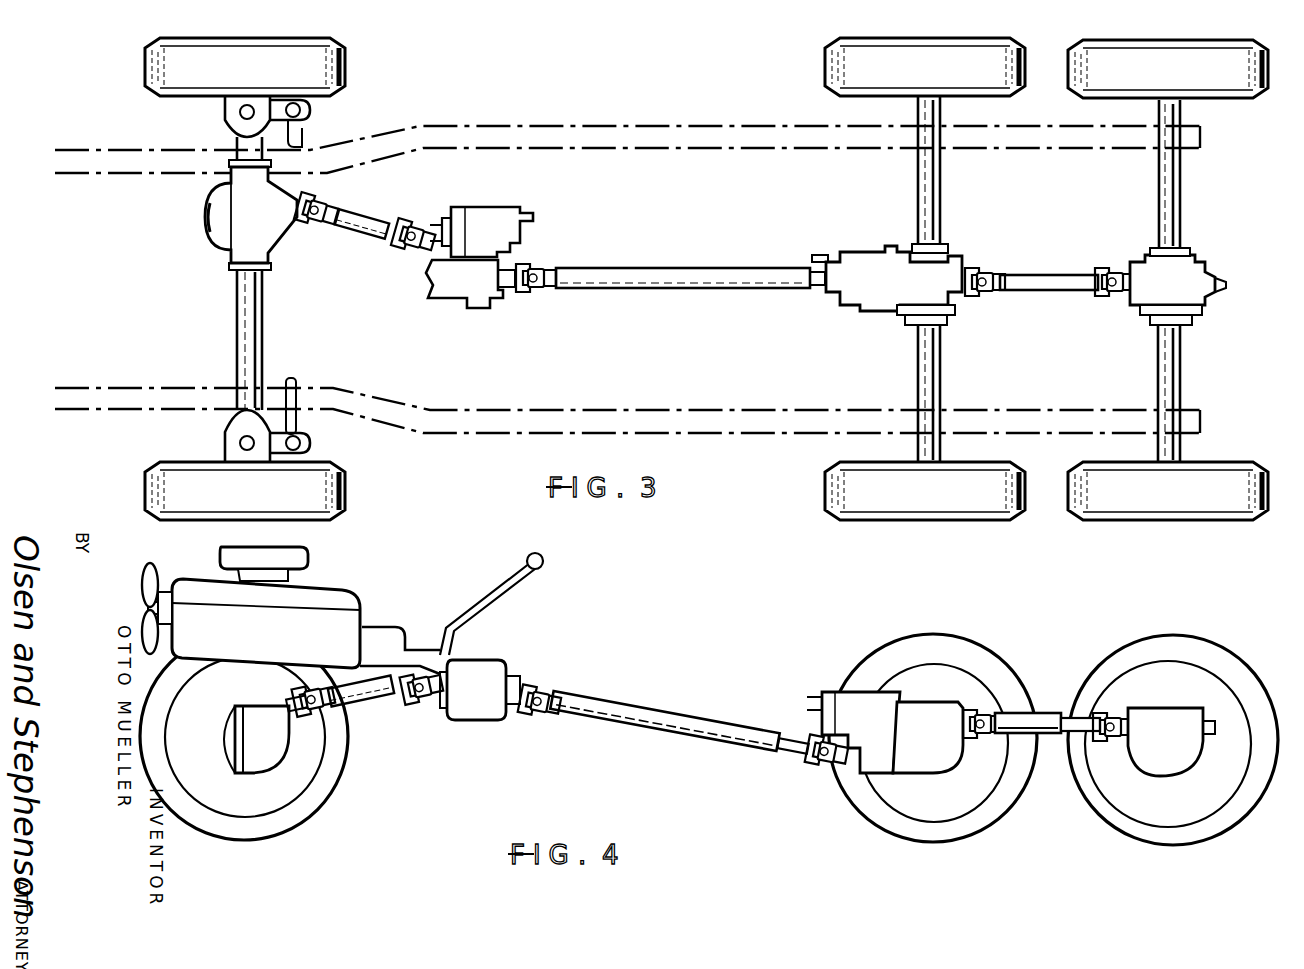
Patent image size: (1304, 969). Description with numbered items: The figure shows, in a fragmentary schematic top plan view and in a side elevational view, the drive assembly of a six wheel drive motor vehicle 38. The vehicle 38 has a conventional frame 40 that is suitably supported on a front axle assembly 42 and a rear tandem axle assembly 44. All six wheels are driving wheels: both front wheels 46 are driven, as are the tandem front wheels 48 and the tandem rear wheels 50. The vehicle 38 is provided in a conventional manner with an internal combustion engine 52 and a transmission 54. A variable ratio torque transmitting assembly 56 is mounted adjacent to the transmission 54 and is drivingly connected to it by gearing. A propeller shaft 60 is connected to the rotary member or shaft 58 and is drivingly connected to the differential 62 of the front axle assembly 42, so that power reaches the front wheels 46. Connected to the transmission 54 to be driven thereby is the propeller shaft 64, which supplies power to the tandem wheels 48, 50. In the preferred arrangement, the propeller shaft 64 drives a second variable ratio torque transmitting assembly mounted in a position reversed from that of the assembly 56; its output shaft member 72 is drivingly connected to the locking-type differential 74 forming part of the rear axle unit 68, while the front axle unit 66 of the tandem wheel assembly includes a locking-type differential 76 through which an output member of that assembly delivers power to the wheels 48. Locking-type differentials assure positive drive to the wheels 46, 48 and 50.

In FIG. 3, the motor vehicle 38 is at (733, 101).
In FIG. 3, the frame 40 is at (560, 118).
In FIG. 3, the front axle assembly 42 is at (262, 322).
In FIG. 3, the rear tandem axle assembly 44 is at (1160, 180).
In FIG. 3, the front wheels 46 is at (348, 70).
In FIG. 3, the tandem front wheels 48 is at (822, 58).
In FIG. 3, the tandem rear wheels 50 is at (1268, 78).
In FIG. 4, the internal combustion engine 52 is at (335, 590).
In FIG. 3, the transmission 54 is at (450, 300).
In FIG. 4, the transmission 54 is at (448, 656).
In FIG. 3, the variable ratio torque transmitting assembly 56 is at (478, 210).
In FIG. 3, the rotary member or shaft 58 is at (446, 214).
In FIG. 3, the propeller shaft 60 is at (366, 215).
In FIG. 3, the differential 62 is at (273, 202).
In FIG. 3, the propeller shaft 64 is at (670, 292).
In FIG. 4, the propeller shaft 64 is at (668, 730).
In FIG. 3, the front axle unit 66 is at (940, 368).
In FIG. 3, the rear axle unit 68 is at (1180, 362).
In FIG. 4, the output shaft member 72 is at (968, 698).
In FIG. 3, the locking-type differential 74 is at (1183, 268).
In FIG. 4, the locking-type differential 74 is at (1158, 753).
In FIG. 3, the locking-type differential 76 is at (930, 262).
In FIG. 4, the locking-type differential 76 is at (850, 690).